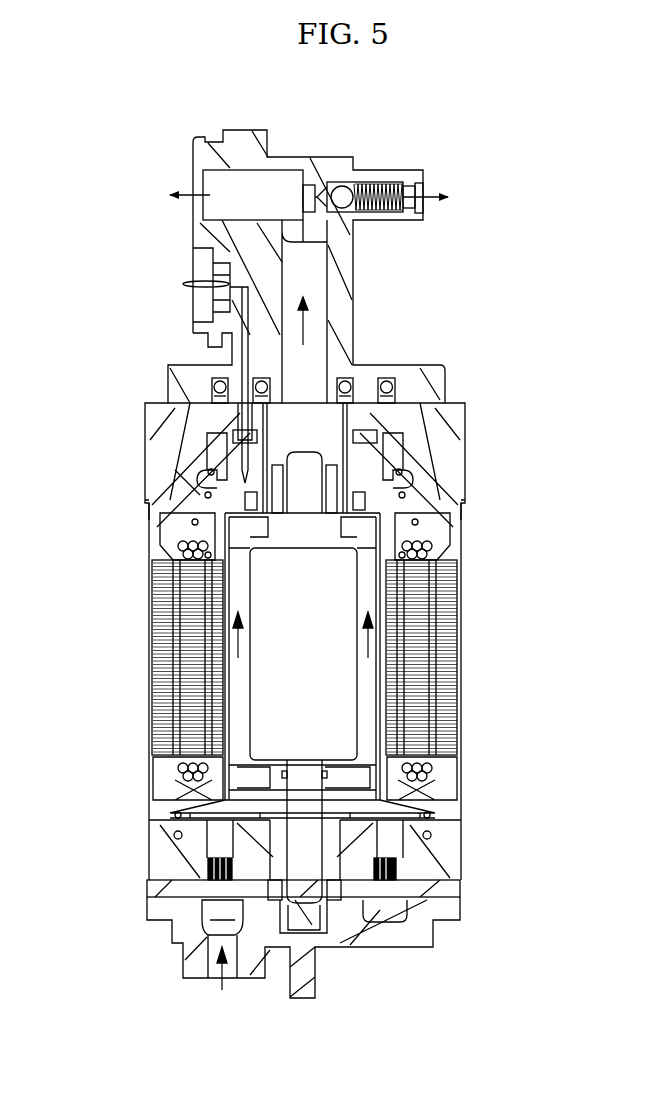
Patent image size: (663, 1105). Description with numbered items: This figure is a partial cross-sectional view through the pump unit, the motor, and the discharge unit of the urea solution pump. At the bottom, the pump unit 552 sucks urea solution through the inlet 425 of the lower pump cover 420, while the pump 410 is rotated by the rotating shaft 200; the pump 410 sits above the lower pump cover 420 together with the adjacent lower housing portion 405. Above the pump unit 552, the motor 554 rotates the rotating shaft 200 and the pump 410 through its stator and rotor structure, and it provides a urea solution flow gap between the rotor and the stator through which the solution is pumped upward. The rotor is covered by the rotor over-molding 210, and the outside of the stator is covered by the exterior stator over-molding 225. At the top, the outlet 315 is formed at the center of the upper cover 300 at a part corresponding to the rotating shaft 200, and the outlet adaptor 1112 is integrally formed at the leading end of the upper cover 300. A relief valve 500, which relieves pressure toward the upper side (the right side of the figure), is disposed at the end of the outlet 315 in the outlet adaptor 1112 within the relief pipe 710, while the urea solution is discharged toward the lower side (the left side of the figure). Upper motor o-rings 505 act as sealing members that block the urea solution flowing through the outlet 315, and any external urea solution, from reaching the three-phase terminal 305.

The outlet adaptor 1112 is at (245, 148).
The relief pipe 710 is at (383, 177).
The relief valve 500 is at (392, 216).
The upper motor o-rings 505 is at (342, 380).
The outlet 315 is at (297, 280).
The three-phase terminal 305 is at (247, 357).
The upper cover 300 is at (187, 383).
The exterior stator over-molding 225 is at (157, 512).
The rotating shaft 200 is at (300, 507).
The rotor over-molding 210 is at (330, 588).
The motor 554 is at (482, 572).
The pump unit 552 is at (482, 817).
The lower housing 405 is at (158, 850).
The pump 410 is at (197, 870).
The lower pump cover 420 is at (185, 918).
The inlet 425 is at (212, 960).